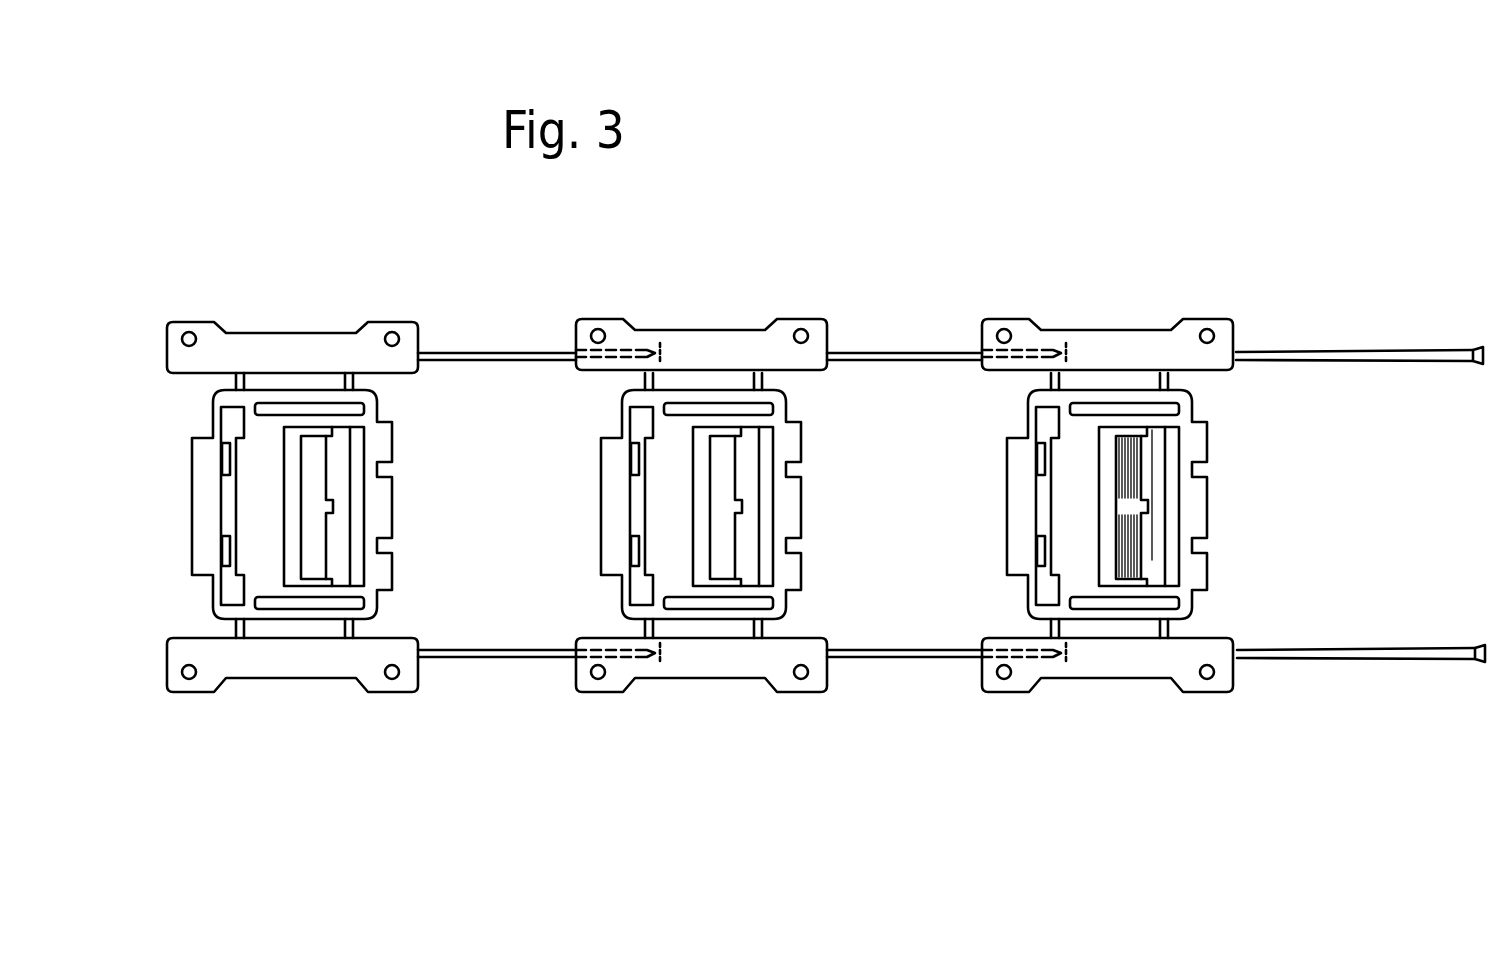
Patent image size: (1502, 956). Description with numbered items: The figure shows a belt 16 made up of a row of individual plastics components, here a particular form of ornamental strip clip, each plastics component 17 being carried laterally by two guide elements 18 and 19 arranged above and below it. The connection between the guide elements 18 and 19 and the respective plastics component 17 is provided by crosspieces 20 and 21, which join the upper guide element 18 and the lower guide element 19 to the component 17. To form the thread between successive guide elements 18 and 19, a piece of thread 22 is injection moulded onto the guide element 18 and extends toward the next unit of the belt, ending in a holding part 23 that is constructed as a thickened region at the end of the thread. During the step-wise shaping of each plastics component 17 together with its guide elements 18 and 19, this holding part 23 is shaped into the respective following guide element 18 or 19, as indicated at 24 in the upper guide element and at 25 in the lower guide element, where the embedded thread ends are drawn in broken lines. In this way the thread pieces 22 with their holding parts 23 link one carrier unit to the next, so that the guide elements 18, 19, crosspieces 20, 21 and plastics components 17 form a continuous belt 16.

The belt 16 is at (835, 313).
The plastics component 17 is at (1210, 505).
The guide element 18 is at (1108, 338).
The guide element 19 is at (1133, 665).
The crosspiece 20 is at (1054, 379).
The crosspiece 21 is at (1054, 630).
The piece of thread 22 is at (1298, 352).
The holding part 23 is at (1478, 347).
The shaped-in location of holding part 24 is at (1061, 345).
The shaped-in location of holding part 25 is at (1062, 658).